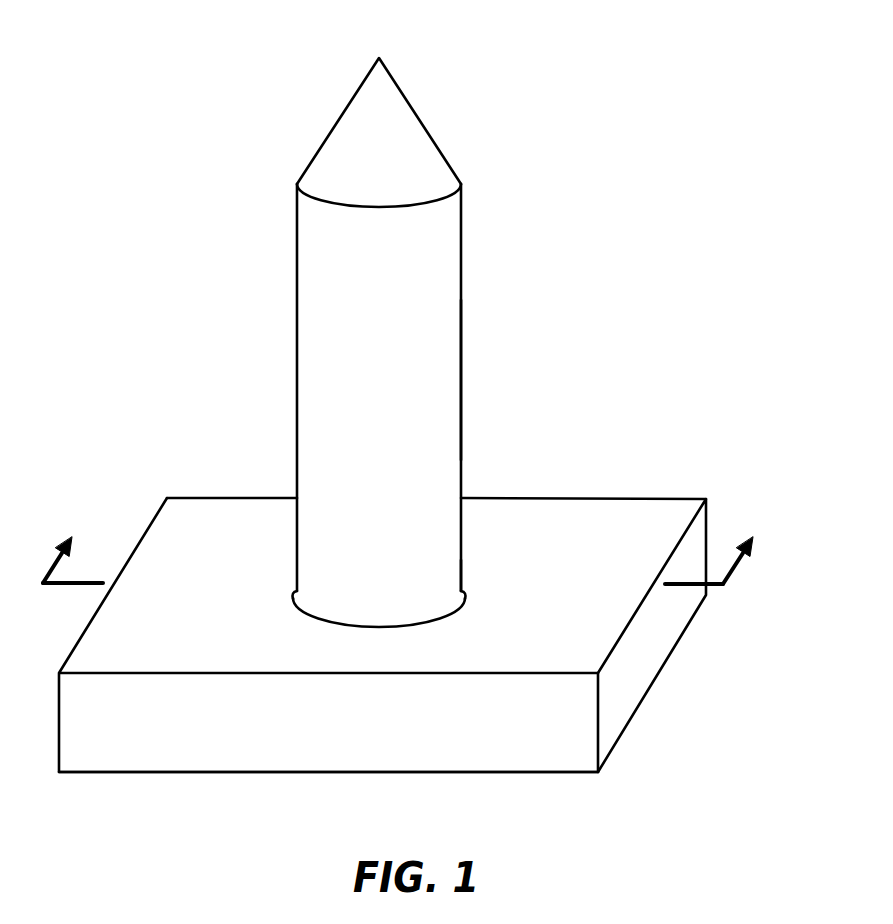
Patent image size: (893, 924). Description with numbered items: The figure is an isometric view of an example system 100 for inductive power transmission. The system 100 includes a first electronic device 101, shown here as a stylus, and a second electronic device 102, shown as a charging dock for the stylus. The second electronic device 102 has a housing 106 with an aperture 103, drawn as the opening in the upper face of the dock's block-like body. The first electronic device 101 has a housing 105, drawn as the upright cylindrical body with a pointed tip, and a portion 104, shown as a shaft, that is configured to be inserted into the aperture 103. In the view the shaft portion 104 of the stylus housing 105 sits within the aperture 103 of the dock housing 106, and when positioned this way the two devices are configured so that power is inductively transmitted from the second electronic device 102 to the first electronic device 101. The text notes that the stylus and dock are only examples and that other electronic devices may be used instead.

The system 100 is at (259, 68).
The first electronic device 101 is at (473, 300).
The second electronic device 102 is at (676, 666).
The aperture 103 is at (464, 607).
The portion 104 is at (475, 590).
The housing 105 is at (461, 378).
The housing 106 is at (402, 758).